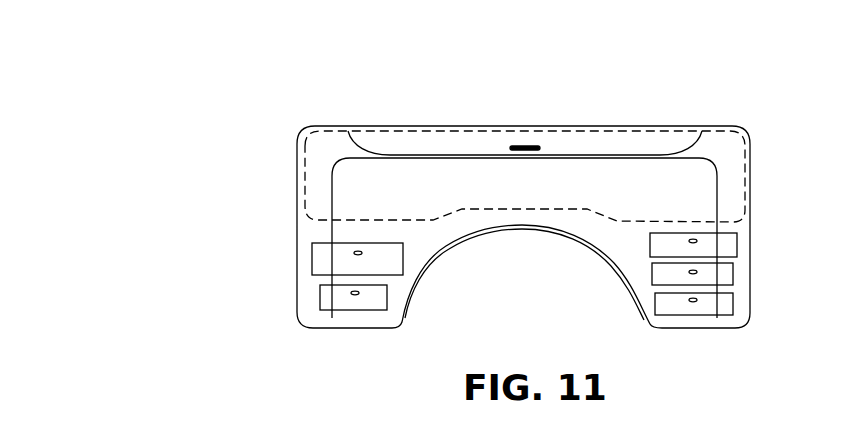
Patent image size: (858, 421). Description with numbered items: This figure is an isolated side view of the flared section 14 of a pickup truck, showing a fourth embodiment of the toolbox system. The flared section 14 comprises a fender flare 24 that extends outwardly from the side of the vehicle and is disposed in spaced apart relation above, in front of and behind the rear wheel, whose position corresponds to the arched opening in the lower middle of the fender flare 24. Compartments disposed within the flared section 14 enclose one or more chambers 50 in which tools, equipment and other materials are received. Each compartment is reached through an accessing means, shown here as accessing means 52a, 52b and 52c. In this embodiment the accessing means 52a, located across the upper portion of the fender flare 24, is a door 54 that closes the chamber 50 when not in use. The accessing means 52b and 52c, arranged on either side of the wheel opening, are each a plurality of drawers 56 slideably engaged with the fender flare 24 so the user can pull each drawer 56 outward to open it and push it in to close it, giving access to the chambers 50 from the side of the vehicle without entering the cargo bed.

The flared section 14 is at (752, 142).
The fender flare 24 is at (578, 221).
The chamber 50 is at (370, 182).
The accessing means 52a is at (489, 128).
The accessing means 52b is at (325, 298).
The accessing means 52c is at (729, 298).
The door 54 is at (605, 144).
The drawer 56 is at (380, 297).